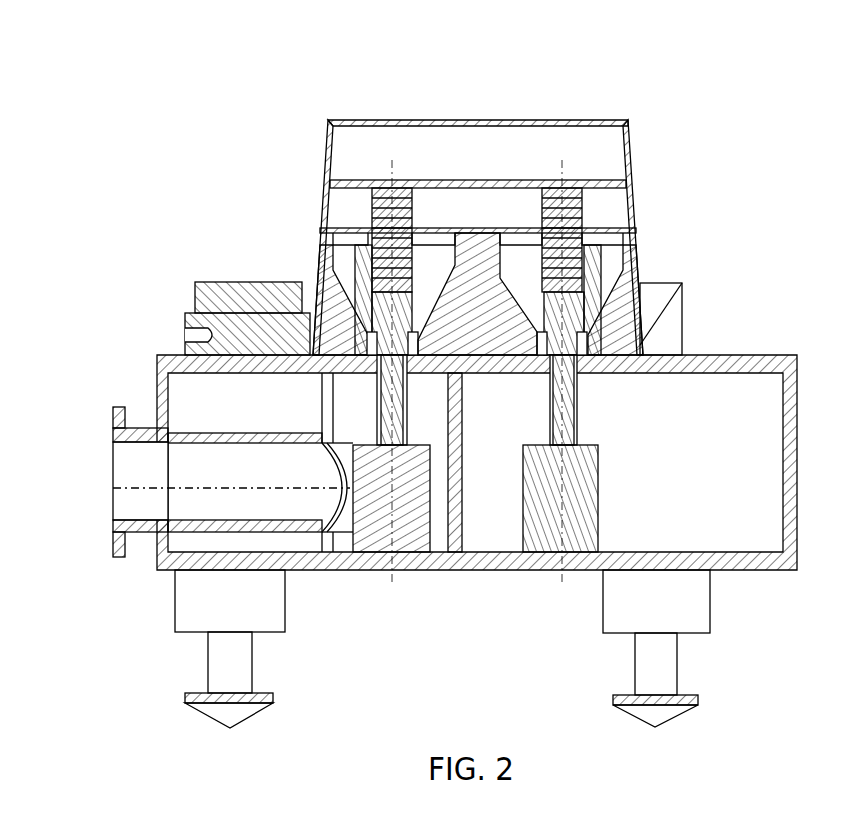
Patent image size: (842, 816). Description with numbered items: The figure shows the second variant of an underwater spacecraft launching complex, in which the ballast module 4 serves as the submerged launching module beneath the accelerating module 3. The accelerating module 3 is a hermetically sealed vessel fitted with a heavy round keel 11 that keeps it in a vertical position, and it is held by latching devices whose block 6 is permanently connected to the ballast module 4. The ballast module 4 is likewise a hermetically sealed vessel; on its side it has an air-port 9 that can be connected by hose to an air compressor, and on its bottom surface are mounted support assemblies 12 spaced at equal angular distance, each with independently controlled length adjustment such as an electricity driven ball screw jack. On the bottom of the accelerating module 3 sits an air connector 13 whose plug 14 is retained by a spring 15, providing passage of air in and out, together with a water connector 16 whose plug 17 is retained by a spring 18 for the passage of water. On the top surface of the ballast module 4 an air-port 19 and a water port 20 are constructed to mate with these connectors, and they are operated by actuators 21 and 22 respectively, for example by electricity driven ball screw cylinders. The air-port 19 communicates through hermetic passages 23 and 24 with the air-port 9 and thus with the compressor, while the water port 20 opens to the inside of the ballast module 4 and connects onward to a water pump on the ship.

The accelerating module 3 is at (393, 120).
The ballast module 4 is at (735, 355).
The block 6 is at (232, 282).
The air-port 9 is at (112, 407).
The heavy round keel 11 is at (476, 232).
The support assemblies 12 is at (185, 708).
The air connector 13 is at (325, 231).
The plug 14 is at (342, 236).
The spring 15 is at (365, 190).
The water connector 16 is at (600, 237).
The plug 17 is at (637, 228).
The spring 18 is at (597, 188).
The air-port 19 is at (192, 316).
The water port 20 is at (683, 293).
The actuator 21 is at (428, 543).
The actuator 22 is at (523, 522).
The hermetic passage 23 is at (198, 534).
The hermetic passage 24 is at (322, 408).